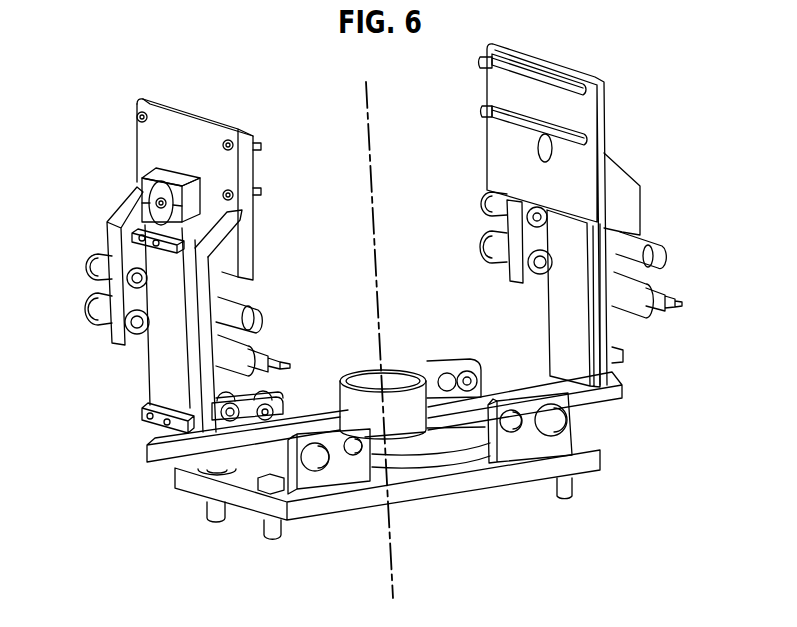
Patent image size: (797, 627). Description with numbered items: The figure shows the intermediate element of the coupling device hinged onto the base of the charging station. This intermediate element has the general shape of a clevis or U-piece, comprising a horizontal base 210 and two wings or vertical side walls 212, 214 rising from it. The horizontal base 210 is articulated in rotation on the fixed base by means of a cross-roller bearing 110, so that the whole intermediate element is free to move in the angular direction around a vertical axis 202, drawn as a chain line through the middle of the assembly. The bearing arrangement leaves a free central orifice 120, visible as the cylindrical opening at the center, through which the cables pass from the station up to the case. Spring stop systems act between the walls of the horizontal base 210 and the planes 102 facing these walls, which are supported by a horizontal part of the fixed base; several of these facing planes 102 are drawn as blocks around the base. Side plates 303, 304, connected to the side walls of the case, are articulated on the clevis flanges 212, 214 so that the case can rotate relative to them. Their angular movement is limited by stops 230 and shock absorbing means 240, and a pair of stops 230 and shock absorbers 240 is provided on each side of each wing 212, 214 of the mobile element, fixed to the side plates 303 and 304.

The plane 102 is at (285, 397).
The cross-roller bearing 110 is at (449, 456).
The central orifice 120 is at (346, 369).
The vertical axis 202 is at (372, 150).
The horizontal base 210 is at (250, 453).
The vertical side wall 212 is at (168, 350).
The vertical side wall 214 is at (565, 303).
The stop 230 is at (100, 311).
The shock absorbing means 240 is at (100, 269).
The side plate 303 is at (157, 146).
The side plate 304 is at (502, 90).